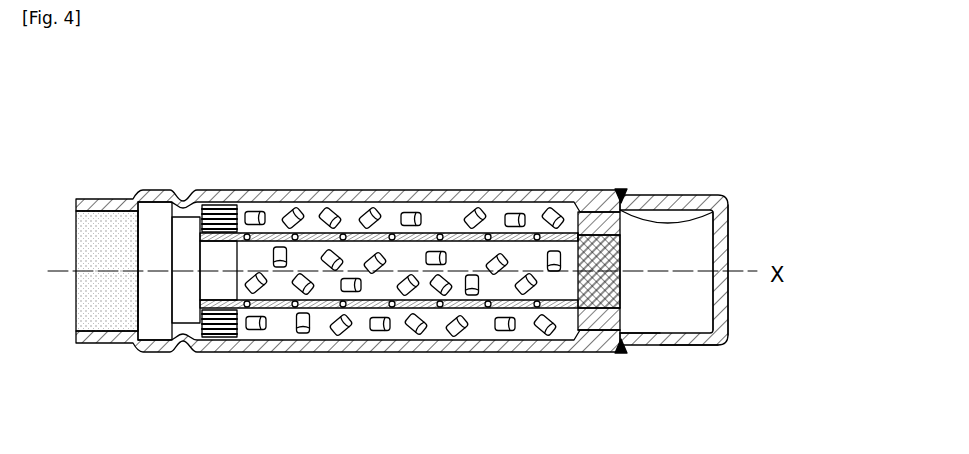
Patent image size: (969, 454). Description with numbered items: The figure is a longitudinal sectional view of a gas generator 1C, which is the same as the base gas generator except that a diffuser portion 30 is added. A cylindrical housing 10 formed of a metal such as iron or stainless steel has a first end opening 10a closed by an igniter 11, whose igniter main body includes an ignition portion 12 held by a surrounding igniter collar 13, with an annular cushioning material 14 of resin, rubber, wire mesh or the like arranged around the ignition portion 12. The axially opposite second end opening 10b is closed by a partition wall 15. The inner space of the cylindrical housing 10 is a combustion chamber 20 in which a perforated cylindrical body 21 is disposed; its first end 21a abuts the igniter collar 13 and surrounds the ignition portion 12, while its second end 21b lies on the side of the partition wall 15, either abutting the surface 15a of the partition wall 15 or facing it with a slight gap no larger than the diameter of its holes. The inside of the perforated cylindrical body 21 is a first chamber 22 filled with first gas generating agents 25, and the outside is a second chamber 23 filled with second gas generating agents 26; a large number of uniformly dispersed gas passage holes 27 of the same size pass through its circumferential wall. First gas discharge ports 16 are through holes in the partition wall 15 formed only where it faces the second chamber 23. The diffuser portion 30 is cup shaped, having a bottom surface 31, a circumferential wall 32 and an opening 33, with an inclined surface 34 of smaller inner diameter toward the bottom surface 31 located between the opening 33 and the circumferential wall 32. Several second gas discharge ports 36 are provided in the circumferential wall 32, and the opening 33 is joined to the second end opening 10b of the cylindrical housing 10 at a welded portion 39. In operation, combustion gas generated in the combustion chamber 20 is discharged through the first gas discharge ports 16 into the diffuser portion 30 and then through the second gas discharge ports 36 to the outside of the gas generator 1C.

The gas generator 1C is at (328, 185).
The cylindrical housing 10 is at (463, 190).
The first end opening 10a is at (74, 199).
The second end opening 10b is at (716, 215).
The igniter 11 is at (96, 412).
The ignition portion 12 is at (215, 283).
The igniter collar 13 is at (148, 282).
The annular cushioning material 14 is at (215, 205).
The partition wall 15 is at (621, 283).
The surface of the partition wall 15a is at (621, 302).
The first gas discharge ports 16 is at (592, 222).
The combustion chamber 20 is at (433, 216).
The perforated cylindrical body 21 is at (273, 233).
The first end 21a is at (198, 240).
The second end 21b is at (620, 238).
The first chamber 22 is at (287, 292).
The second chamber 23 is at (438, 331).
The first gas generating agents 25 is at (343, 291).
The second gas generating agents 26 is at (505, 330).
The gas passage holes 27 is at (488, 236).
The diffuser portion 30 is at (724, 187).
The bottom surface 31 is at (728, 229).
The circumferential wall 32 is at (641, 203).
The opening 33 is at (607, 351).
The inclined surface 34 is at (627, 348).
The second gas discharge ports 36 is at (678, 347).
The welded portion 39 is at (621, 191).